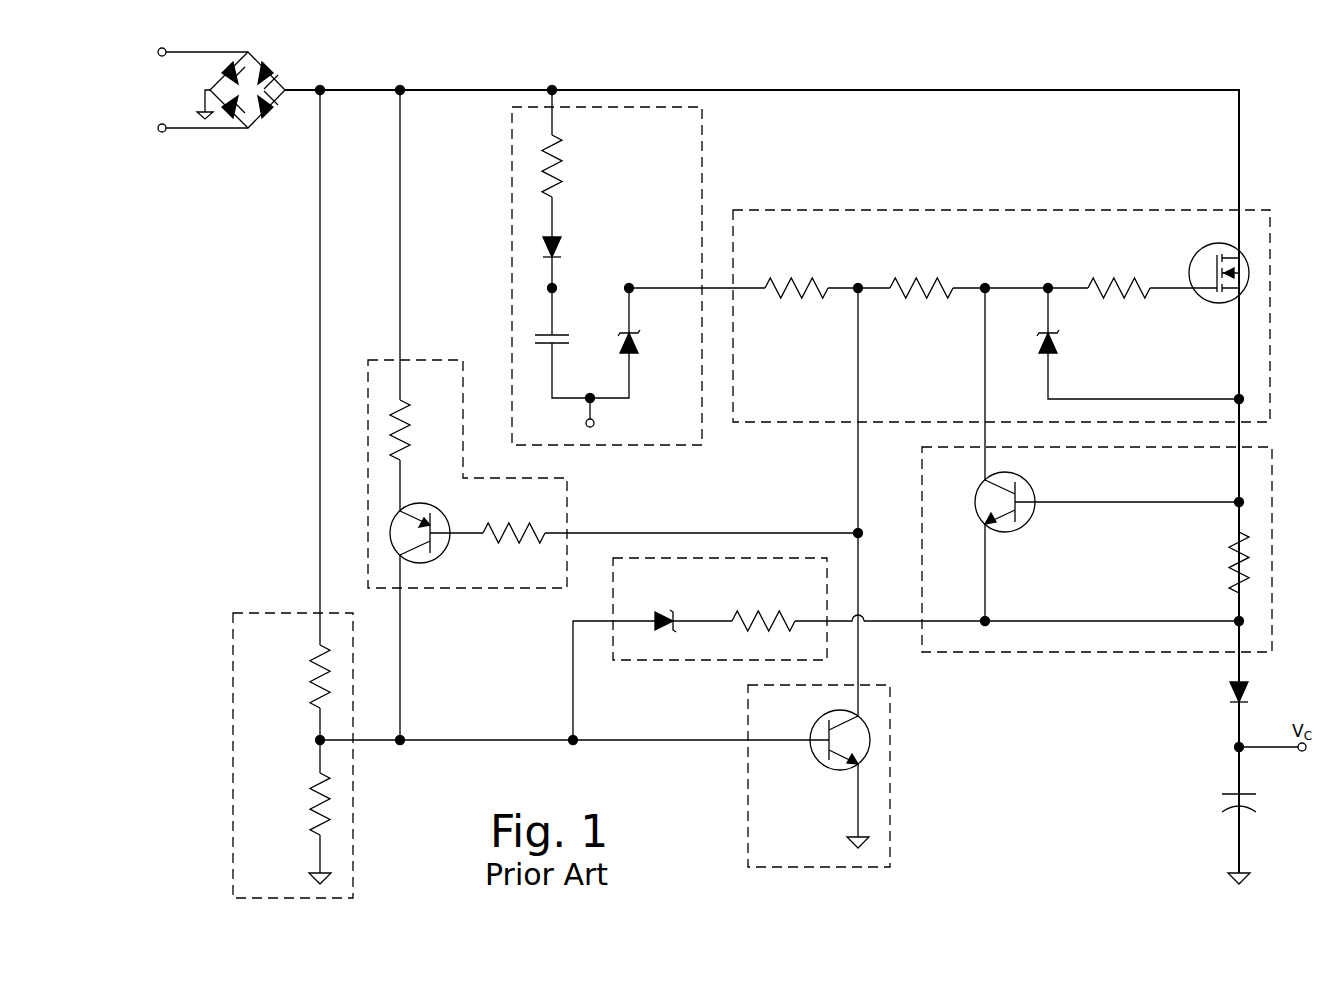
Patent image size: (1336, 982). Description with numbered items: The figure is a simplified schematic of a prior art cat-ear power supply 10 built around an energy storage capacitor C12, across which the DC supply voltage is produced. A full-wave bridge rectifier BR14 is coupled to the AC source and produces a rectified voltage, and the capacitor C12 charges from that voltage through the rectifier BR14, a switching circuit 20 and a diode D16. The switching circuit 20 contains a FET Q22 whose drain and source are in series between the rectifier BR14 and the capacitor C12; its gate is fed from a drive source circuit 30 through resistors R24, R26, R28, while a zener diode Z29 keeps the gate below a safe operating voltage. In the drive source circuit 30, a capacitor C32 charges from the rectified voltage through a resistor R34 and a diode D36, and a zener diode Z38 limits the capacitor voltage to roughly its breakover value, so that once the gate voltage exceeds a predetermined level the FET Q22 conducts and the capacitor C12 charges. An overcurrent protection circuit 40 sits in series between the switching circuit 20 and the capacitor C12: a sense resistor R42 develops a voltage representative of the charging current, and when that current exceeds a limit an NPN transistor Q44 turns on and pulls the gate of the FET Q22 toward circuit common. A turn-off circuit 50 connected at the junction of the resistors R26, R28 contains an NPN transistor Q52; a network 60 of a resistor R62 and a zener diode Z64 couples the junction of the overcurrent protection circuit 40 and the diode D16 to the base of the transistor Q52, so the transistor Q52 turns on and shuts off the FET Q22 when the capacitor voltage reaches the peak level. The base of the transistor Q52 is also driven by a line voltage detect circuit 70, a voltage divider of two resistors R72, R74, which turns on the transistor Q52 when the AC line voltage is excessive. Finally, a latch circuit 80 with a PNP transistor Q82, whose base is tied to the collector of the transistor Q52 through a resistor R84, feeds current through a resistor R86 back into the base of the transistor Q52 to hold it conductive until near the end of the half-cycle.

The cat-ear power supply 10 is at (1288, 152).
The full-wave bridge rectifier BR14 is at (250, 137).
The diode D16 is at (1230, 686).
The energy storage capacitor C12 is at (1233, 794).
The switching circuit 20 is at (1090, 208).
The FET Q22 is at (1204, 248).
The resistor R24 is at (1128, 296).
The resistor R26 is at (930, 283).
The resistor R28 is at (792, 284).
The zener diode Z29 is at (1058, 348).
The drive source circuit 30 is at (702, 130).
The capacitor C32 is at (558, 350).
The resistor R34 is at (565, 165).
The diode D36 is at (560, 248).
The zener diode Z38 is at (640, 346).
The overcurrent protection circuit 40 is at (1045, 655).
The sense resistor R42 is at (1234, 574).
The NPN bipolar junction transistor Q44 is at (1032, 518).
The turn-off circuit 50 is at (890, 775).
The NPN transistor Q52 is at (830, 770).
The feedback circuit 60 is at (700, 660).
The resistor R62 is at (770, 610).
The zener diode Z64 is at (668, 607).
The line voltage detect circuit 70 is at (268, 612).
The resistor R72 is at (314, 666).
The resistor R74 is at (314, 800).
The latch circuit 80 is at (515, 590).
The PNP transistor Q82 is at (442, 514).
The resistor R84 is at (530, 545).
The resistor R86 is at (413, 402).